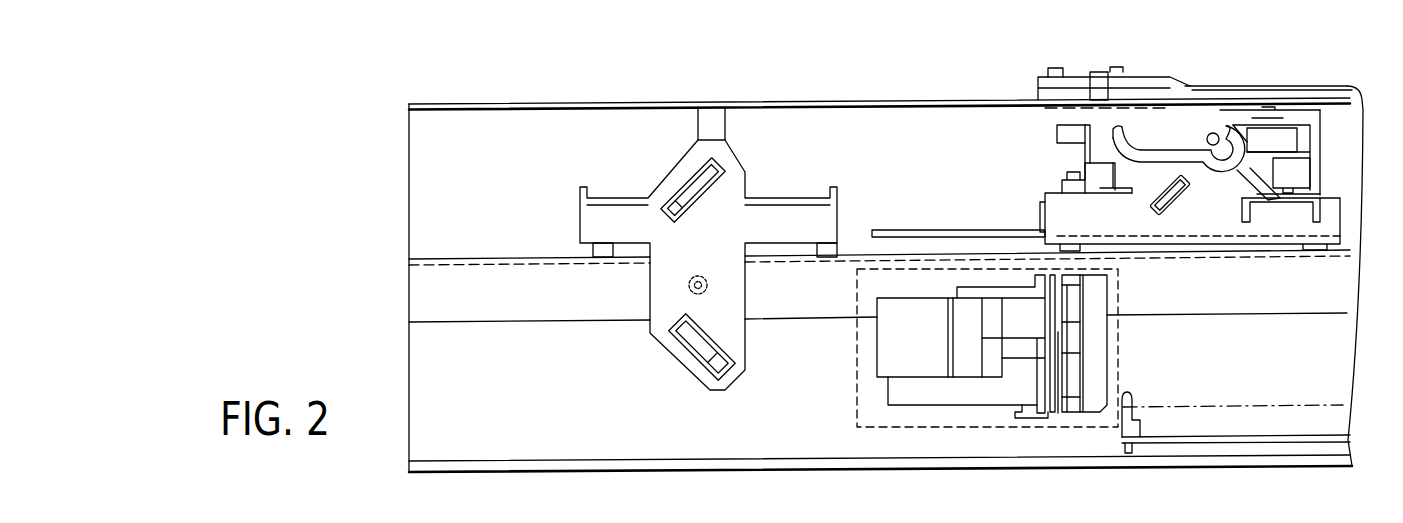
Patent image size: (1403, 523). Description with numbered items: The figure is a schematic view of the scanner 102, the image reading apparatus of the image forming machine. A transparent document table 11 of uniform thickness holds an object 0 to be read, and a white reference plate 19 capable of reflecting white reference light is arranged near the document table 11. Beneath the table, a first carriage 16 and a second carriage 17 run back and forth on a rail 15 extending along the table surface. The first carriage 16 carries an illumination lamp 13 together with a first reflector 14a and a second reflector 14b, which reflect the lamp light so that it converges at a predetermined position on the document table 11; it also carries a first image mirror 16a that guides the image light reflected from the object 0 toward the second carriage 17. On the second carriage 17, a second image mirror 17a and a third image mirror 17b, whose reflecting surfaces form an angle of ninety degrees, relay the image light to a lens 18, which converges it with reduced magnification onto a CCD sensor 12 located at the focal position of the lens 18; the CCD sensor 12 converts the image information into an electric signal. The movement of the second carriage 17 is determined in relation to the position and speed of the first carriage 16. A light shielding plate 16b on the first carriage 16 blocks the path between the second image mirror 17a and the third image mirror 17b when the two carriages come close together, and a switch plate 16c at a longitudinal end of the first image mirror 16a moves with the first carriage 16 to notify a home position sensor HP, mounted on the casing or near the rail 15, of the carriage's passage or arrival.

The scanner 102 is at (893, 97).
The home position sensor HP is at (712, 112).
The object 0 is at (1278, 86).
The document table 11 is at (1315, 85).
The CCD sensor 12 is at (1097, 402).
The illumination lamp 13 is at (1212, 131).
The first reflector 14a is at (1197, 172).
The second reflector 14b is at (1128, 142).
The rail 15 is at (593, 310).
The first carriage 16 is at (1112, 179).
The first image mirror 16a is at (1147, 208).
The light shielding plate 16b is at (953, 227).
The switch plate 16c is at (1057, 135).
The second carriage 17 is at (708, 265).
The second image mirror 17a is at (695, 190).
The third image mirror 17b is at (697, 338).
The lens 18 is at (880, 350).
The white reference plate 19 is at (1033, 118).